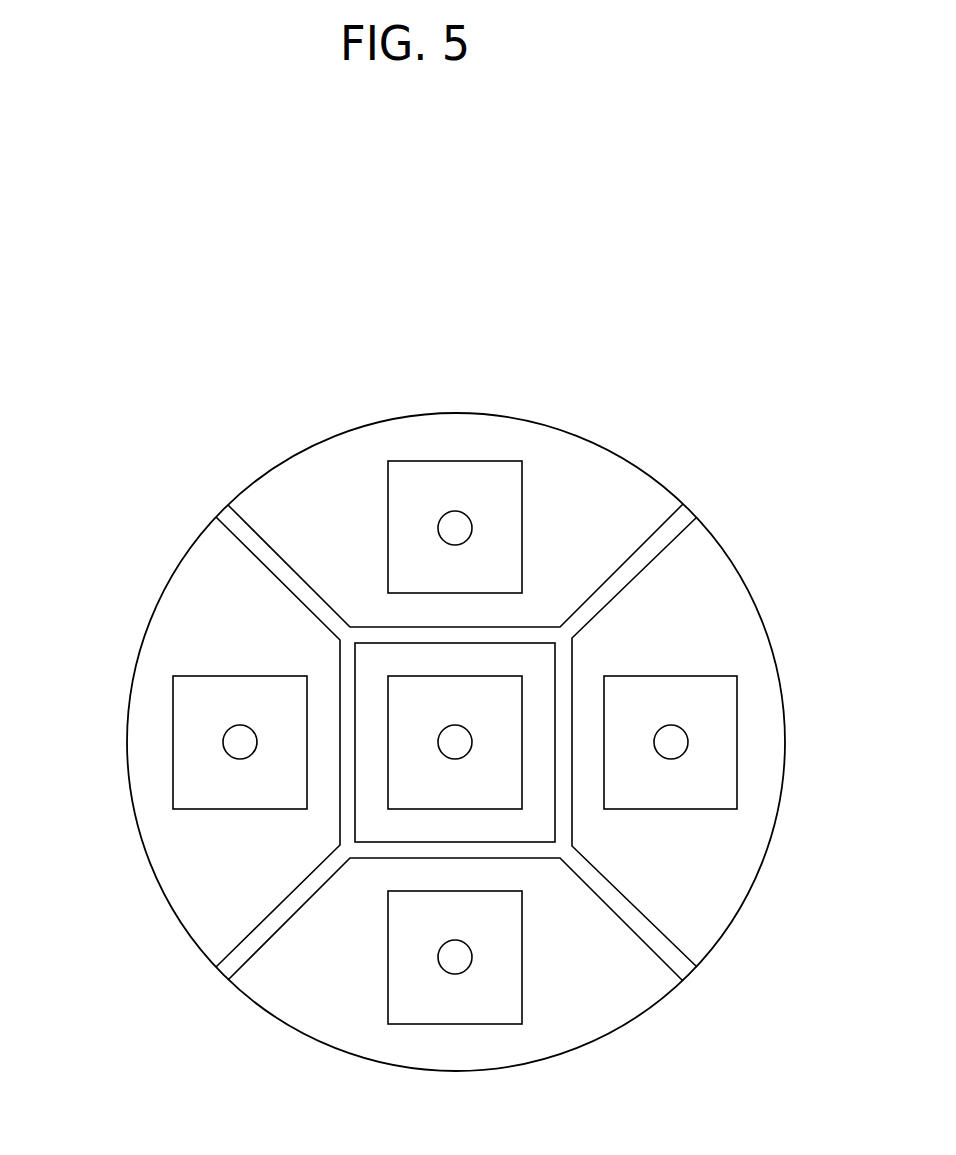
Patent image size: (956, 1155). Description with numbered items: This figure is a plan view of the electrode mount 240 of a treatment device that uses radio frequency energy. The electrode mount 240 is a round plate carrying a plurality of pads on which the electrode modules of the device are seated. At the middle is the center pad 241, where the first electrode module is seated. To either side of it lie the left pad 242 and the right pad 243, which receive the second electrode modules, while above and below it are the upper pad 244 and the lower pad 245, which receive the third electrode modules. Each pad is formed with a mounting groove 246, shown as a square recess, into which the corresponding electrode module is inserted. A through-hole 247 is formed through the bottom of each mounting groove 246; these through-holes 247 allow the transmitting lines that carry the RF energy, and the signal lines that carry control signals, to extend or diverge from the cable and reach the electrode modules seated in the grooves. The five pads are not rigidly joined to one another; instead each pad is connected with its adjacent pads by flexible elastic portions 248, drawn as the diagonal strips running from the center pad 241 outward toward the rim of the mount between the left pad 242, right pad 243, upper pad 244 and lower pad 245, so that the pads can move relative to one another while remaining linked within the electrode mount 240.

The electrode mount 240 is at (661, 424).
The center pad 241 is at (474, 668).
The left pad 242 is at (205, 910).
The right pad 243 is at (715, 905).
The upper pad 244 is at (287, 495).
The lower pad 245 is at (630, 1000).
The mounting groove 246 is at (498, 488).
The through-hole 247 is at (231, 738).
The flexible elastic portion 248 is at (673, 528).